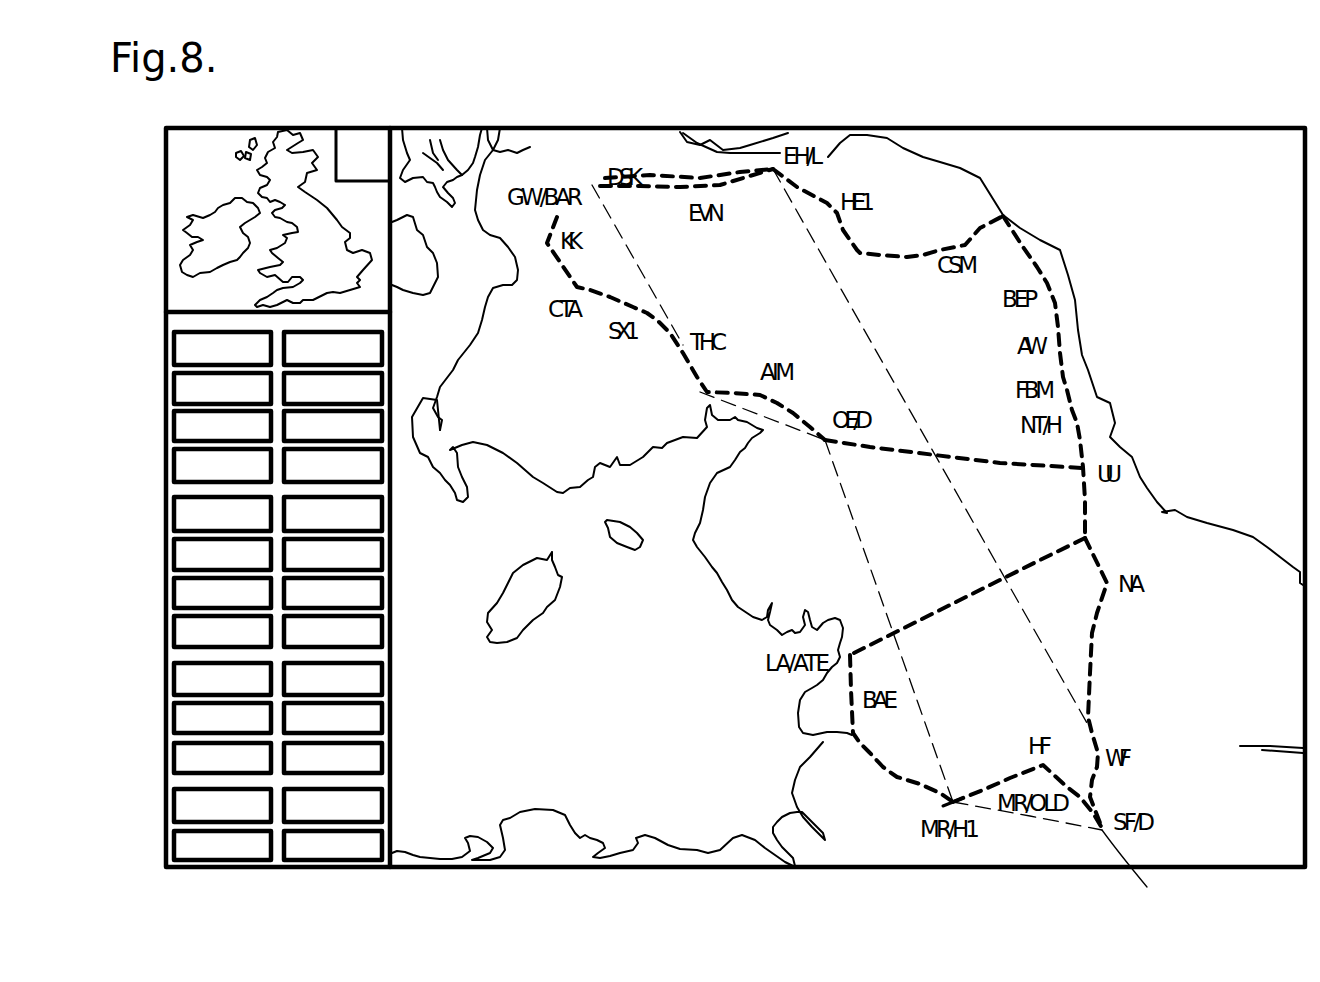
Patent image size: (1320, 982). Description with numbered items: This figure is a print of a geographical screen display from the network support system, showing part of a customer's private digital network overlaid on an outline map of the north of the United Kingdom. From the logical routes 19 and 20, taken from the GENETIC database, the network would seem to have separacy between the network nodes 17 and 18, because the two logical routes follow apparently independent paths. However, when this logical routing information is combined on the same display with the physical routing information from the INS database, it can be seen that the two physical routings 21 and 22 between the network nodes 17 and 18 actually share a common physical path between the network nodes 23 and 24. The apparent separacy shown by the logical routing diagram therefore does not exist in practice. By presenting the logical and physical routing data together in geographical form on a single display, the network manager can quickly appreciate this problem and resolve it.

The network node 17 is at (693, 267).
The network node 18 is at (1143, 872).
The logical route 19 is at (845, 297).
The logical route 20 is at (872, 572).
The physical routing 21 is at (1010, 225).
The physical routing 22 is at (952, 802).
The network node 23 is at (1085, 466).
The network node 24 is at (1088, 540).